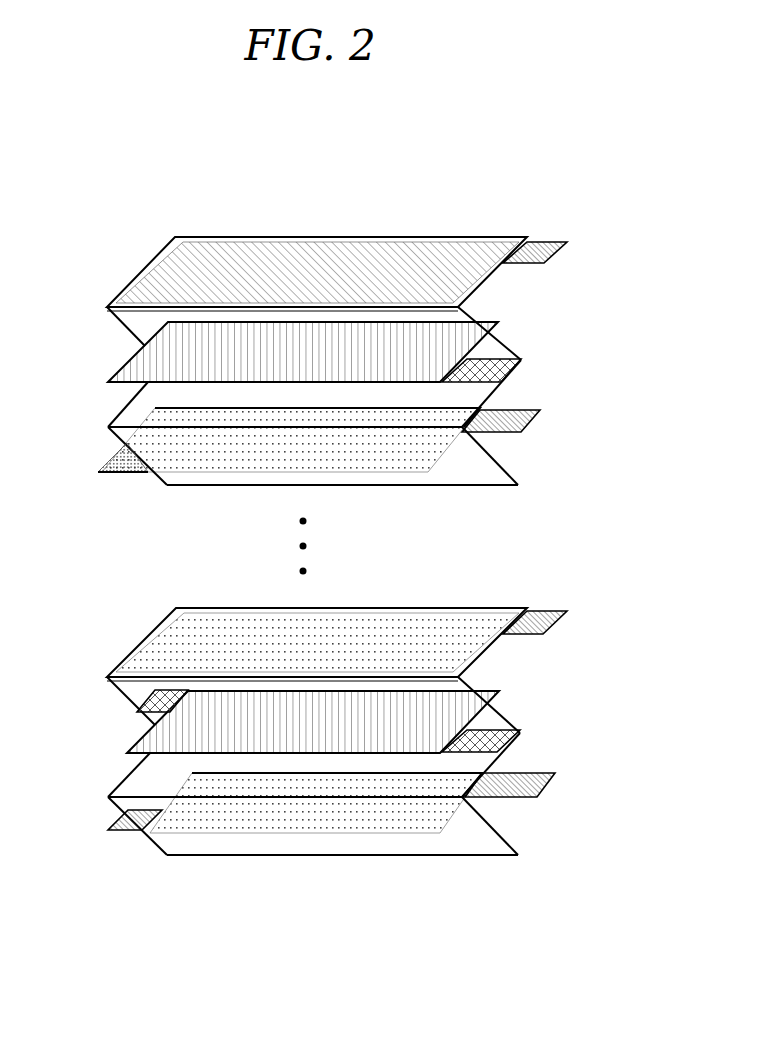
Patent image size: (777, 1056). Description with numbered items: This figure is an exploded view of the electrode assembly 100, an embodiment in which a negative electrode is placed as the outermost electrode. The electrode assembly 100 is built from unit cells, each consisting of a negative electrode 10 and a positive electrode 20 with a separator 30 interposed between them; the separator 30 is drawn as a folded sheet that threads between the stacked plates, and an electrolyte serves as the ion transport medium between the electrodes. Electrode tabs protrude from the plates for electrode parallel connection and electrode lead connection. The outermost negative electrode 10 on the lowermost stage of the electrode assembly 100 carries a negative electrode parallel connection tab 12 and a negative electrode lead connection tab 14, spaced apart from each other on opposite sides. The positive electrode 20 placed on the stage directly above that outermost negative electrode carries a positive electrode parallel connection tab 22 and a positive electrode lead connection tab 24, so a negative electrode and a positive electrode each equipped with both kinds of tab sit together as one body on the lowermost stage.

The electrode assembly 100 is at (180, 163).
The negative electrode 10 is at (158, 282).
The negative electrode parallel connection tab 12 is at (528, 789).
The negative electrode lead connection tab 14 is at (122, 824).
The positive electrode 20 is at (152, 362).
The positive electrode parallel connection tab 22 is at (488, 742).
The positive electrode lead connection tab 24 is at (153, 699).
The separator 30 is at (134, 322).